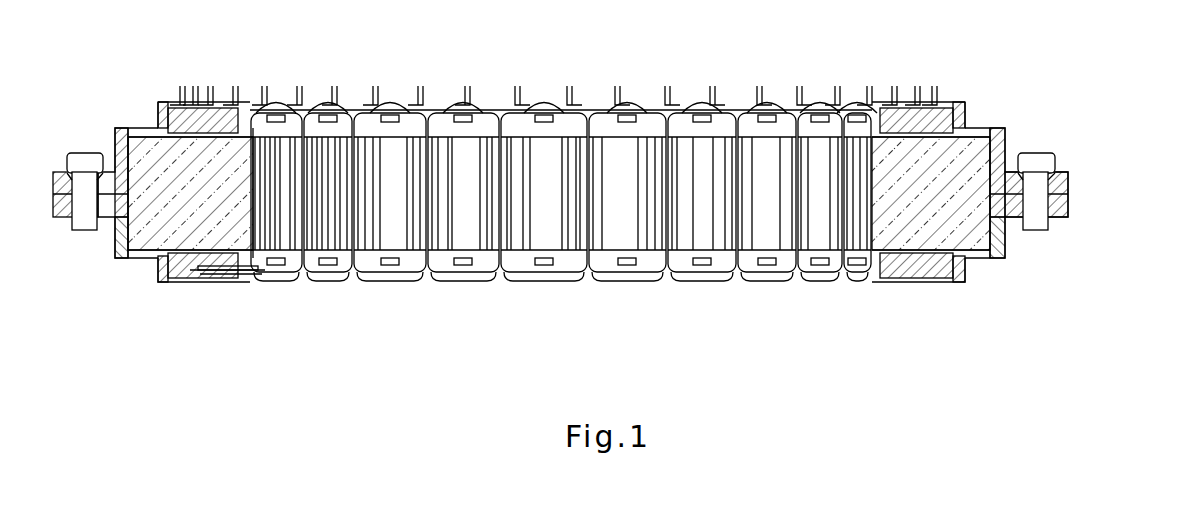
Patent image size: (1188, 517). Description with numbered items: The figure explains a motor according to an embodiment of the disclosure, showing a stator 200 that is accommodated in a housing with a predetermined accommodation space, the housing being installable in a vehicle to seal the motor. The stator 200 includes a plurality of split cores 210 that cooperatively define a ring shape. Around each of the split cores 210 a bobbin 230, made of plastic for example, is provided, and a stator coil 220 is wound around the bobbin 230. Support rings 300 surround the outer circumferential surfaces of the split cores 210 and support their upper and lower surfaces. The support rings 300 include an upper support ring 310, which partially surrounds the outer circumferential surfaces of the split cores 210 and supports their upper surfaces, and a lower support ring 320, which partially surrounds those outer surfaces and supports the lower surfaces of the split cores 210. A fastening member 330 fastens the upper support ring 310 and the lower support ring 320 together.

The stator 200 is at (551, 185).
The split core 210 is at (622, 222).
The stator coil 220 is at (232, 272).
The bobbin 230 is at (162, 283).
The support ring 300 is at (620, 204).
The upper support ring 310 is at (1012, 140).
The lower support ring 320 is at (1012, 249).
The fastening member 330 is at (88, 232).